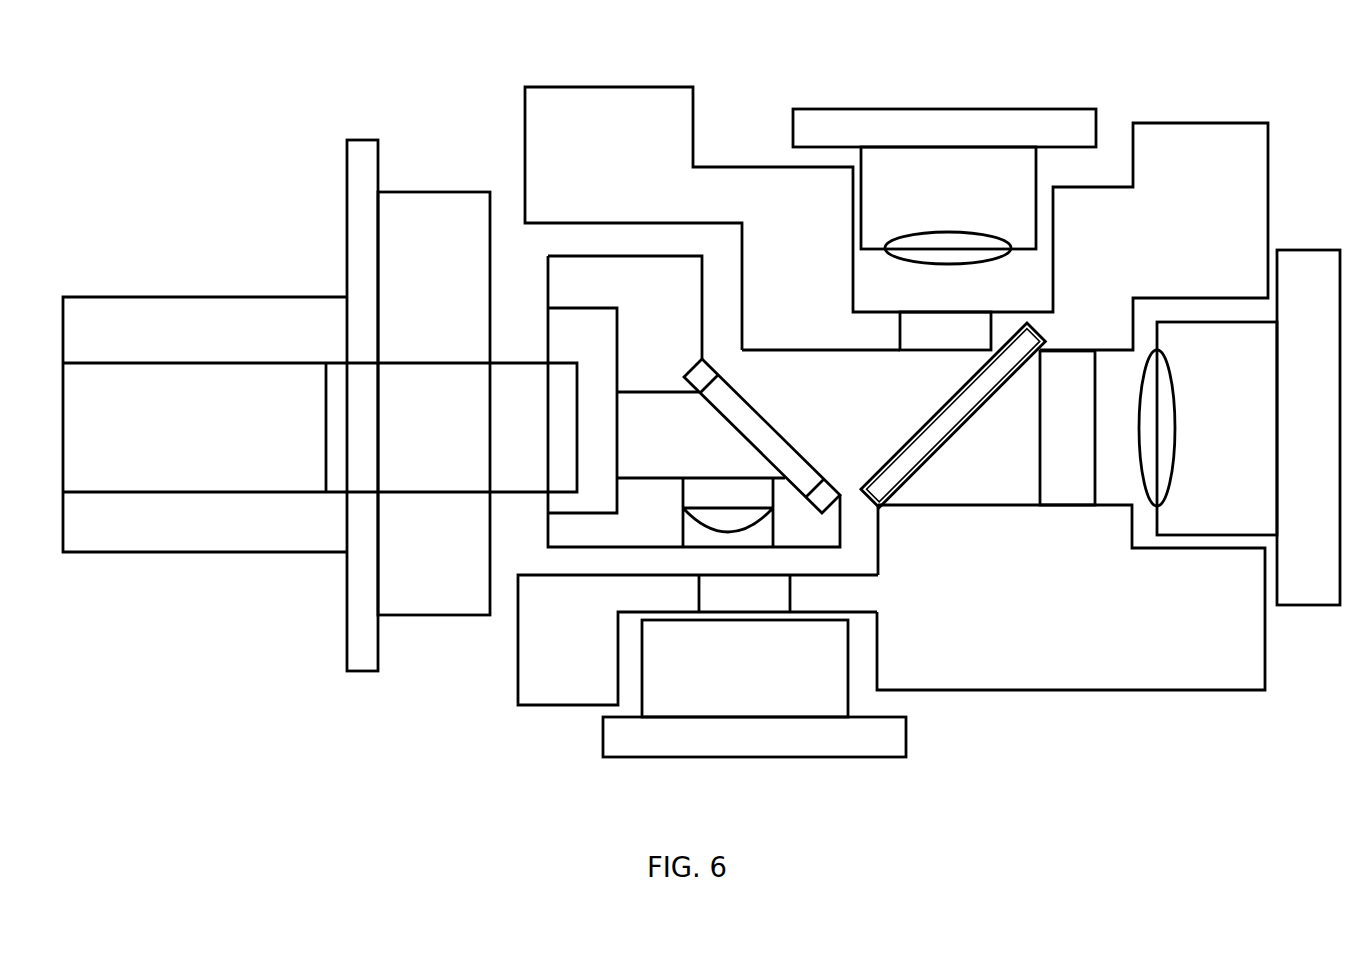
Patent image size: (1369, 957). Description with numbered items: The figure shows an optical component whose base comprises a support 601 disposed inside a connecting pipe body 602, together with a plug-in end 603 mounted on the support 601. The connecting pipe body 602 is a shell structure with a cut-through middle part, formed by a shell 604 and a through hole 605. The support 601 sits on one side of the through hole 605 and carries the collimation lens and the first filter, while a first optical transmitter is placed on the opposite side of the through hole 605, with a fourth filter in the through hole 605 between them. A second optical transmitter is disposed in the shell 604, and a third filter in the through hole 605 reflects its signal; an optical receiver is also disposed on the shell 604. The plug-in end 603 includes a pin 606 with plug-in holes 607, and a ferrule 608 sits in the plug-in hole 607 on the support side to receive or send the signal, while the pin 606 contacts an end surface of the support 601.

The support 601 is at (656, 280).
The connecting pipe body 602 is at (975, 700).
The plug-in end 603 is at (245, 567).
The shell 604 is at (655, 123).
The through hole 605 is at (848, 348).
The pin 606 is at (345, 297).
The plug-in hole 607 is at (258, 358).
The ferrule 608 is at (465, 362).